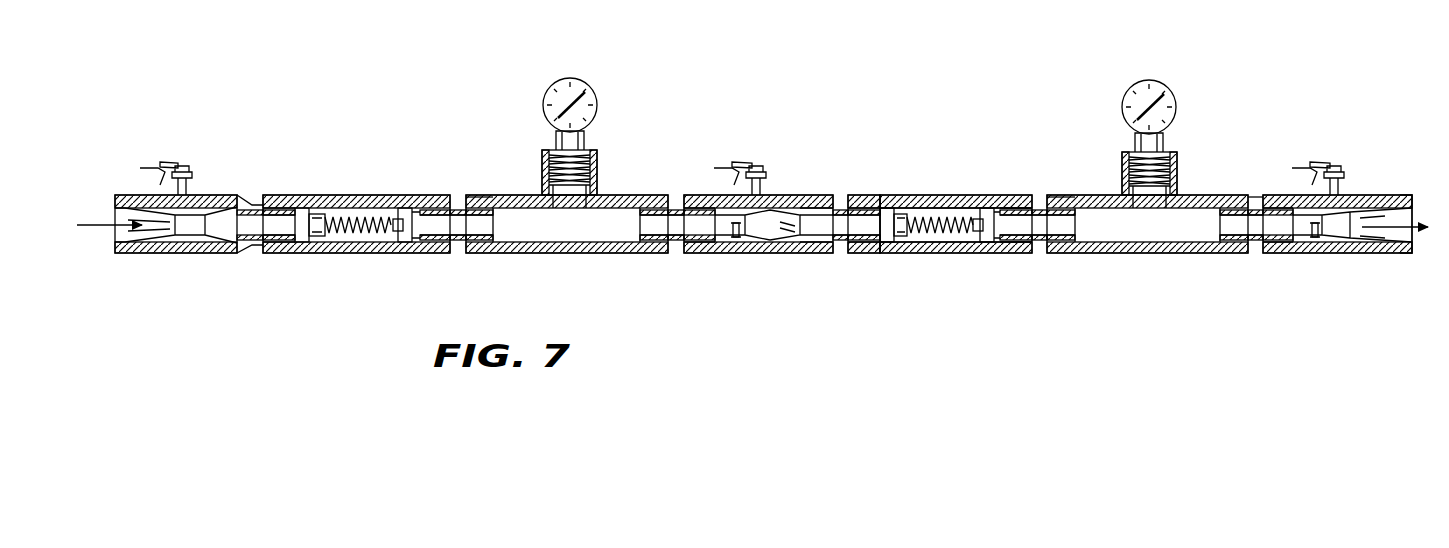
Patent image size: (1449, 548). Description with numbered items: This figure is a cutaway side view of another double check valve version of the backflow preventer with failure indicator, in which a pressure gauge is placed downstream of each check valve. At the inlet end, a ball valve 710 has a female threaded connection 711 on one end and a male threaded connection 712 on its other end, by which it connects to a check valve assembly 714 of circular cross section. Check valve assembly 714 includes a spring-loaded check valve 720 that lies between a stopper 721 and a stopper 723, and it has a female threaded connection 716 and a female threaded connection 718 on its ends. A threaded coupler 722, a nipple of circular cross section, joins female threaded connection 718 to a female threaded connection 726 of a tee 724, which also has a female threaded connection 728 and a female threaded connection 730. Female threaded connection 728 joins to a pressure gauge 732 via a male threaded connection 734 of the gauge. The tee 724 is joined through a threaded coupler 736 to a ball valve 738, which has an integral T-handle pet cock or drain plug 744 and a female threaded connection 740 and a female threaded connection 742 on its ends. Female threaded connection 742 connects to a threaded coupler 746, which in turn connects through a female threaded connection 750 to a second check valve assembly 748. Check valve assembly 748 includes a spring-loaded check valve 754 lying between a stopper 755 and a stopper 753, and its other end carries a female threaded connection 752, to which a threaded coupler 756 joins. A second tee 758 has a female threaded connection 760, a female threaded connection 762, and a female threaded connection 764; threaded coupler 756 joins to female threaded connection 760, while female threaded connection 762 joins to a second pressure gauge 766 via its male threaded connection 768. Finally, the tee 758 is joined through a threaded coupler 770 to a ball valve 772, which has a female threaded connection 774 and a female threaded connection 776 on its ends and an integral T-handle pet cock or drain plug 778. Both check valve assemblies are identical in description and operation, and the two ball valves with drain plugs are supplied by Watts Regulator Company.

The ball valve 710 is at (188, 258).
The female threaded connection 711 is at (124, 195).
The male threaded connection 712 is at (273, 253).
The check valve assembly 714 is at (342, 190).
The female threaded connection 716 is at (266, 210).
The female threaded connection 718 is at (447, 195).
The spring-loaded check valve 720 is at (345, 252).
The stopper 721 is at (311, 215).
The threaded coupler 722 is at (447, 253).
The stopper 723 is at (411, 210).
The tee 724 is at (565, 258).
The female threaded connection 726 is at (478, 197).
The female threaded connection 728 is at (597, 158).
The female threaded connection 730 is at (653, 197).
The pressure gauge 732 is at (580, 76).
The male threaded connection 734 is at (553, 153).
The threaded coupler 736 is at (673, 253).
The ball valve 738 is at (760, 258).
The female threaded connection 740 is at (697, 197).
The female threaded connection 742 is at (817, 197).
The drain plug 744 is at (736, 240).
The threaded coupler 746 is at (840, 253).
The check valve assembly 748 is at (924, 190).
The female threaded connection 750 is at (855, 195).
The female threaded connection 752 is at (1015, 195).
The stopper 753 is at (990, 195).
The spring-loaded check valve 754 is at (927, 252).
The stopper 755 is at (890, 195).
The threaded coupler 756 is at (1035, 253).
The tee 758 is at (1128, 258).
The female threaded connection 760 is at (1060, 195).
The female threaded connection 762 is at (1127, 157).
The female threaded connection 764 is at (1238, 197).
The pressure gauge 766 is at (1162, 78).
The male threaded connection 768 is at (1173, 157).
The threaded coupler 770 is at (1252, 253).
The ball valve 772 is at (1350, 262).
The female threaded connection 774 is at (1275, 253).
The female threaded connection 776 is at (1393, 197).
The drain plug 778 is at (1315, 242).